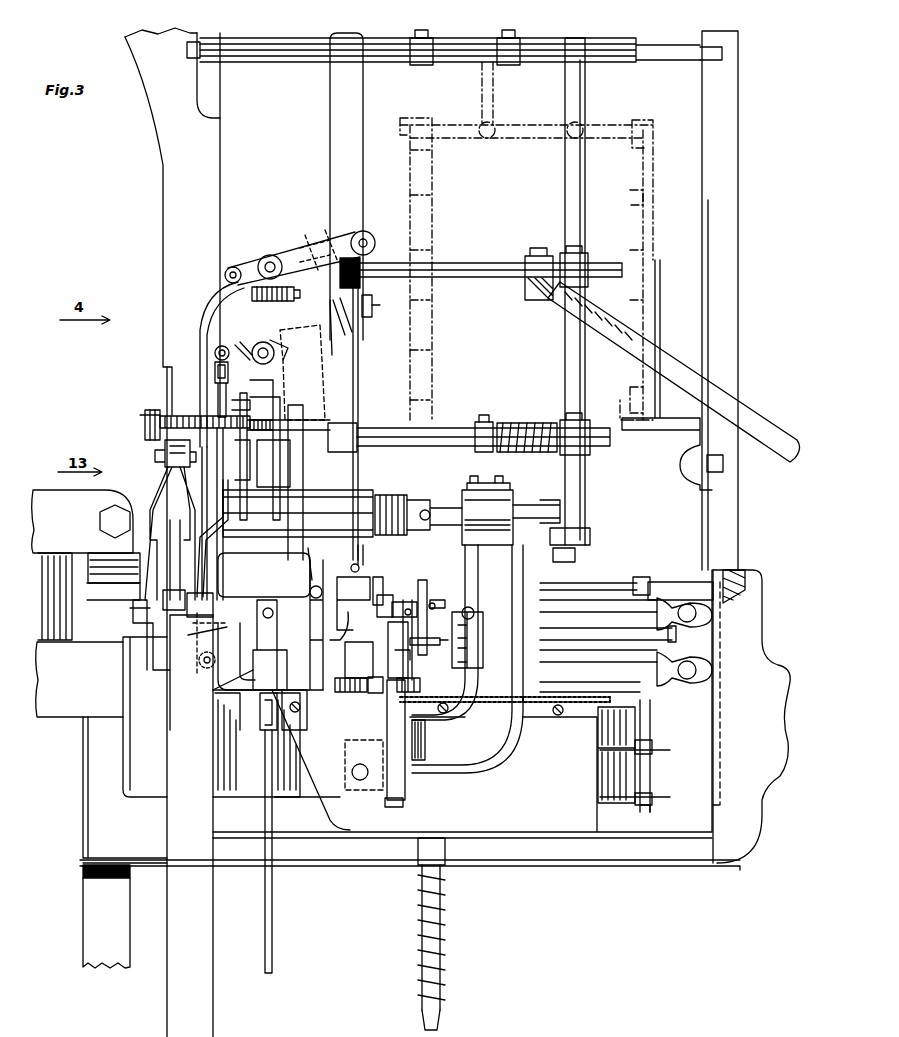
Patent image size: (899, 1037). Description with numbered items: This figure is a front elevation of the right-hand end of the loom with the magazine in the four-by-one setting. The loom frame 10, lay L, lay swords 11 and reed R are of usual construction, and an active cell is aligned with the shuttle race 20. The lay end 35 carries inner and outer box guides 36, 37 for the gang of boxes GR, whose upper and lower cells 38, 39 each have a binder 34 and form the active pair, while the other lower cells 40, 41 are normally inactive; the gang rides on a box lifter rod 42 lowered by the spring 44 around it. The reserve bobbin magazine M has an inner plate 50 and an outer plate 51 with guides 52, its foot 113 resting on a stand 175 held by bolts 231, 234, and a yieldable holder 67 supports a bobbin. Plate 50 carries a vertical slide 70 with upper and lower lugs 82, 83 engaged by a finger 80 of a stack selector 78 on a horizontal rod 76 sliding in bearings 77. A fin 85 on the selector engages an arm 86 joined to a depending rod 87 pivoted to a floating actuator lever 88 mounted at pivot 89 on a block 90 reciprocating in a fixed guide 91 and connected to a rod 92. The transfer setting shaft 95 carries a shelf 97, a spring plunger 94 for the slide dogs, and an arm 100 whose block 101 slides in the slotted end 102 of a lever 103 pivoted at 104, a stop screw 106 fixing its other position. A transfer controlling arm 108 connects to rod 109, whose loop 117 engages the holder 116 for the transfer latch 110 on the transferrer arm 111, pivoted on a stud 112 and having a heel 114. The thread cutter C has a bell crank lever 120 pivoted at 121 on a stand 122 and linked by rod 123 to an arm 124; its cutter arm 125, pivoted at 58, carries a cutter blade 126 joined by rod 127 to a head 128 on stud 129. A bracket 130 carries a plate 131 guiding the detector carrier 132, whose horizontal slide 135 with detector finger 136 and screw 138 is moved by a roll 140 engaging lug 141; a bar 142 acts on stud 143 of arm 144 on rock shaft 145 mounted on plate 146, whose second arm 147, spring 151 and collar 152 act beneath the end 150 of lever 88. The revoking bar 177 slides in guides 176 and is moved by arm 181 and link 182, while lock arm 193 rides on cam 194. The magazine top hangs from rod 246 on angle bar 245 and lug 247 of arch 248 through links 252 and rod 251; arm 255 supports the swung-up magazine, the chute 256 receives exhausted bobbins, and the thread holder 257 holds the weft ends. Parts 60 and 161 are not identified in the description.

The loom frame 10 is at (168, 1005).
The lay swords 11 is at (86, 945).
The shuttle race 20 is at (98, 640).
The binder 34 is at (605, 595).
The lay end 35 is at (736, 870).
The inner box guide 36 is at (148, 500).
The outer box guide 37 is at (755, 620).
The upper cell 38 is at (636, 590).
The lower cell 39 is at (630, 652).
The lower cell 40 is at (640, 722).
The lower cell 41 is at (640, 774).
The box lifter rod 42 is at (440, 1018).
The spring 44 is at (440, 984).
The inner plate 50 is at (340, 127).
The outer plate 51 is at (580, 222).
The guides 52 is at (580, 178).
The pivot 58 is at (158, 455).
The shaft 60 is at (555, 455).
The yieldable holder 67 is at (585, 553).
The vertical slide 70 is at (322, 225).
The horizontal rod 76 is at (258, 343).
The bearings 77 is at (283, 340).
The stack selector 78 is at (240, 345).
The finger 80 is at (302, 372).
The upper lug 82 is at (341, 330).
The lower lug 83 is at (353, 386).
The fin 85 is at (218, 345).
The arm 86 is at (261, 388).
The depending rod 87 is at (200, 643).
The floating actuator lever 88 is at (235, 625).
The pivot 89 is at (268, 612).
The block 90 is at (260, 705).
The fixed guide 91 is at (215, 690).
The rod 92 is at (264, 893).
The spring plunger 94 is at (262, 303).
The transfer setting shaft 95 is at (263, 258).
The longitudinal shelf 97 is at (292, 252).
The arm 100 is at (293, 303).
The small block 101 is at (310, 252).
The slotted end 102 is at (477, 281).
The lever 103 is at (374, 310).
The pivot 104 is at (347, 321).
The adjustable stop screw 106 is at (372, 300).
The transfer controlling arm 108 is at (368, 230).
The rod 109 is at (360, 392).
The transfer latch 110 is at (348, 612).
The transferrer arm 111 is at (308, 482).
The stud 112 is at (522, 530).
The foot 113 is at (340, 543).
The heel 114 is at (478, 490).
The holder 116 is at (372, 572).
The loop 117 is at (357, 558).
The bell crank lever 120 is at (177, 416).
The pivot 121 is at (218, 514).
The stand 122 is at (260, 456).
The upwardly extending rod 123 is at (200, 305).
The arm 124 is at (225, 270).
The cutter arm 125 is at (160, 490).
The cutter blade 126 is at (134, 610).
The rod 127 is at (130, 577).
The head 128 is at (150, 415).
The stud 129 is at (145, 423).
The bracket 130 is at (508, 748).
The plate 131 is at (408, 792).
The detector carrier 132 is at (388, 676).
The horizontal slide 135 is at (422, 585).
The side slipping detector finger 136 is at (445, 640).
The screw 138 is at (440, 600).
The roll 140 is at (383, 585).
The lug 141 is at (405, 601).
The bar 142 is at (435, 600).
The stud 143 is at (428, 647).
The arm 144 is at (410, 658).
The small rock shaft 145 is at (413, 683).
The plate 146 is at (375, 800).
The second arm 147 is at (312, 652).
The right hand end 150 is at (302, 605).
The spring 151 is at (356, 680).
The collar 152 is at (358, 730).
The pin 161 is at (320, 562).
The stand 175 is at (200, 662).
The spaced guides 176 is at (173, 602).
The horizontal revoking bar 177 is at (205, 608).
The arm 181 is at (203, 552).
The link 182 is at (197, 538).
The laterally extending arm 193 is at (462, 610).
The cam 194 is at (474, 616).
The bolts 231 is at (204, 670).
The bolts 234 is at (283, 569).
The angle bar 245 is at (738, 250).
The rod 246 is at (675, 48).
The lug 247 is at (225, 48).
The arch 248 is at (175, 128).
The rod 251 is at (550, 45).
The links 252 is at (428, 35).
The arm 255 is at (668, 432).
The exhausted bobbin chute 256 is at (578, 825).
The thread holder 257 is at (748, 420).
The reserve bobbin magazine M is at (336, 85).
The reed R is at (62, 510).
The thread cutter C is at (130, 596).
The lay L is at (52, 712).
The gang of boxes GR is at (690, 582).